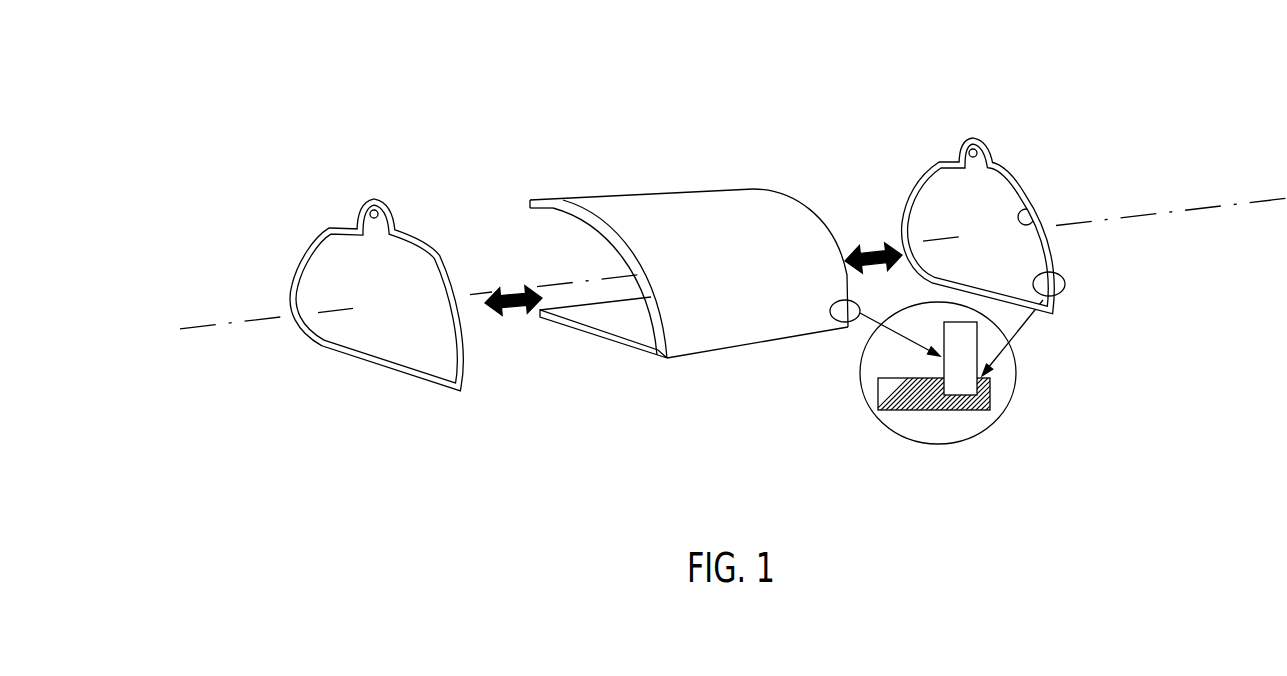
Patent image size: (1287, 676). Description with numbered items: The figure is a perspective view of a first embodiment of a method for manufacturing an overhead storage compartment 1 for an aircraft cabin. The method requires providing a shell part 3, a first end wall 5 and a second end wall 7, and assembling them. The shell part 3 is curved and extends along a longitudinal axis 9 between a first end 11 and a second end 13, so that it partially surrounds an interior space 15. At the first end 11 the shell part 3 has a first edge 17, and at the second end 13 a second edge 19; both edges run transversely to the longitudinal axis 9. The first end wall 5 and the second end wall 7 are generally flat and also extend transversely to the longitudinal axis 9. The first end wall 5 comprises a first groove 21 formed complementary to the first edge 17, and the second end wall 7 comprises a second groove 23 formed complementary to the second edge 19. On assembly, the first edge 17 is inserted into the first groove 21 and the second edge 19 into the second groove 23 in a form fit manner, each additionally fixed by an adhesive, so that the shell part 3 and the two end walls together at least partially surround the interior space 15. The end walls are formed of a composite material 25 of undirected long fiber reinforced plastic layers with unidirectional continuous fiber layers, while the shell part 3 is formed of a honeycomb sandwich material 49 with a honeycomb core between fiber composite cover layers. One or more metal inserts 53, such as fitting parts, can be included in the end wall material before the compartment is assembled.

The overhead storage compartment 1 is at (478, 89).
The shell part 3 is at (723, 272).
The first end wall 5 is at (696, 261).
The second end wall 7 is at (995, 311).
The longitudinal axis 9 is at (1161, 212).
The first end 11 is at (598, 202).
The second end 13 is at (774, 207).
The interior space 15 is at (588, 264).
The first edge 17 is at (578, 215).
The second edge 19 is at (815, 218).
The first groove 21 is at (432, 240).
The second groove 23 is at (1027, 204).
The composite material 25 is at (368, 350).
The honeycomb sandwich material 49 is at (740, 330).
The metal insert 53 is at (362, 213).